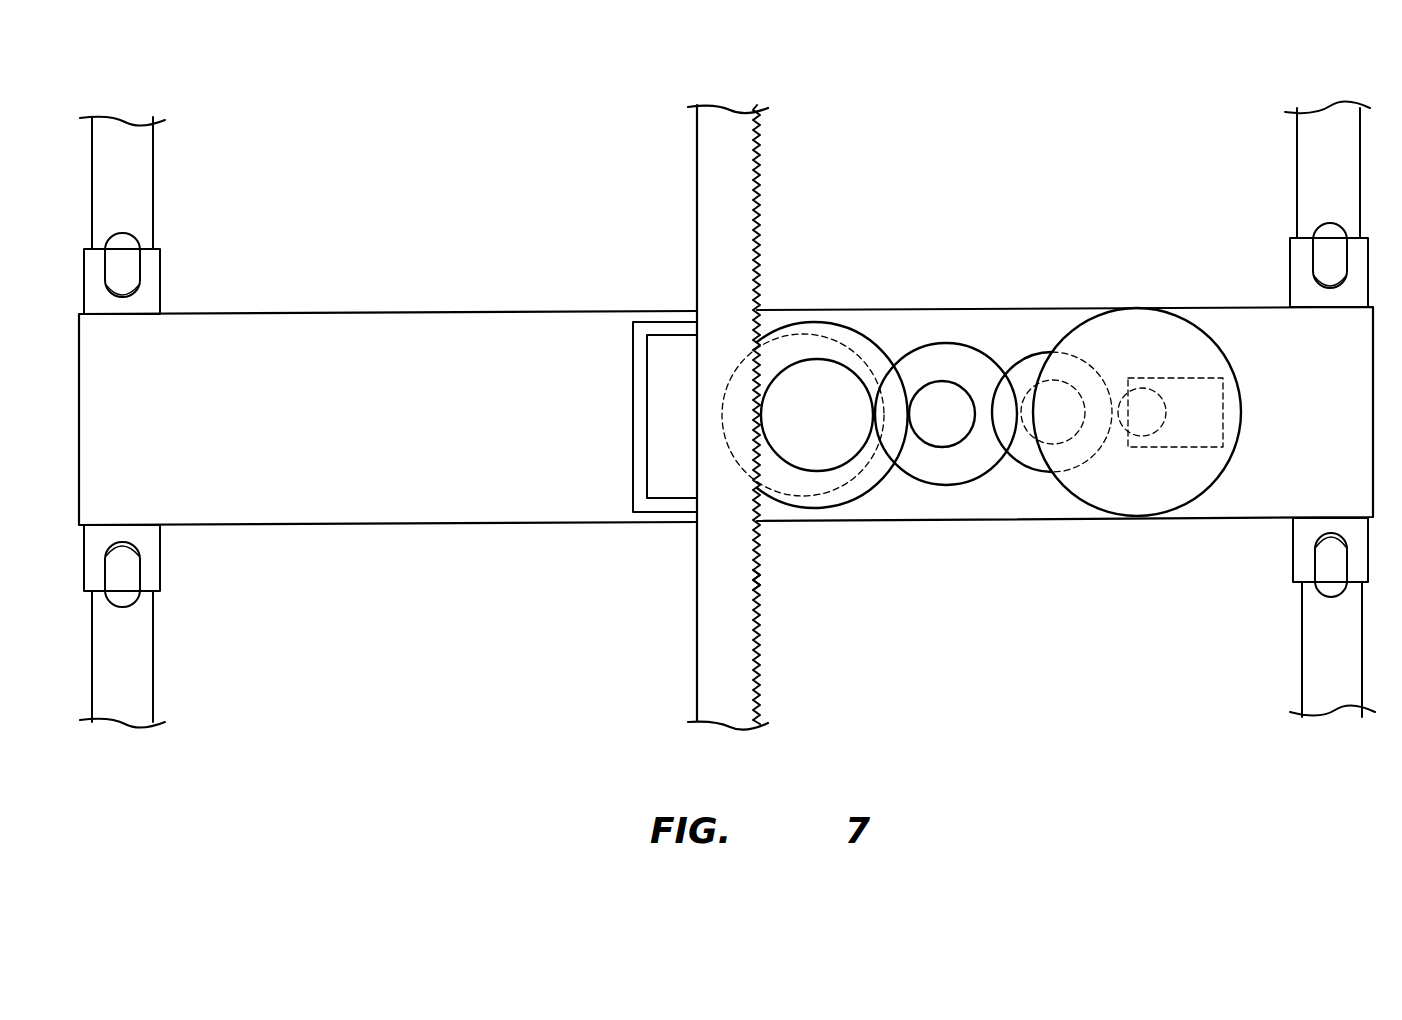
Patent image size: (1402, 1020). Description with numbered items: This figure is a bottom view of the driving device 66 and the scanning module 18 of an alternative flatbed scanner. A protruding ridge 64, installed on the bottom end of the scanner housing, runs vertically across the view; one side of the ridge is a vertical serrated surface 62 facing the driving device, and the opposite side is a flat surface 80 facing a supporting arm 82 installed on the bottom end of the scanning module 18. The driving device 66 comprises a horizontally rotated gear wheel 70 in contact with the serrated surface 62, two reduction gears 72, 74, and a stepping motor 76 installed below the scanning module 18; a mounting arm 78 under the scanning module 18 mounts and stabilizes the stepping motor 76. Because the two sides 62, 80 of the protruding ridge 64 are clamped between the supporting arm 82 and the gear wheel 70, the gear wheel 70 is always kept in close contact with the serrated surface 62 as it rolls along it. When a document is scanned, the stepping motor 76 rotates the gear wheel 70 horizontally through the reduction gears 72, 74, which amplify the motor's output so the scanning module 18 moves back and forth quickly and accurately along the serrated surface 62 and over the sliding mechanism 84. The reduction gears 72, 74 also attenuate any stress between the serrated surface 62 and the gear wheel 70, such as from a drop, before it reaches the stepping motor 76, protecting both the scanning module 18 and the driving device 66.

The scanning module 18 is at (277, 325).
The serrated surface 62 is at (760, 672).
The protruding ridge 64 is at (737, 590).
The driving device 66 is at (1013, 553).
The gear wheel 70 is at (818, 332).
The reduction gear 72 is at (933, 347).
The reduction gear 74 is at (1025, 358).
The stepping motor 76 is at (1132, 323).
The mounting arm 78 is at (1212, 402).
The flat surface 80 is at (697, 618).
The supporting arm 82 is at (633, 412).
The sliding mechanism 84 is at (200, 593).